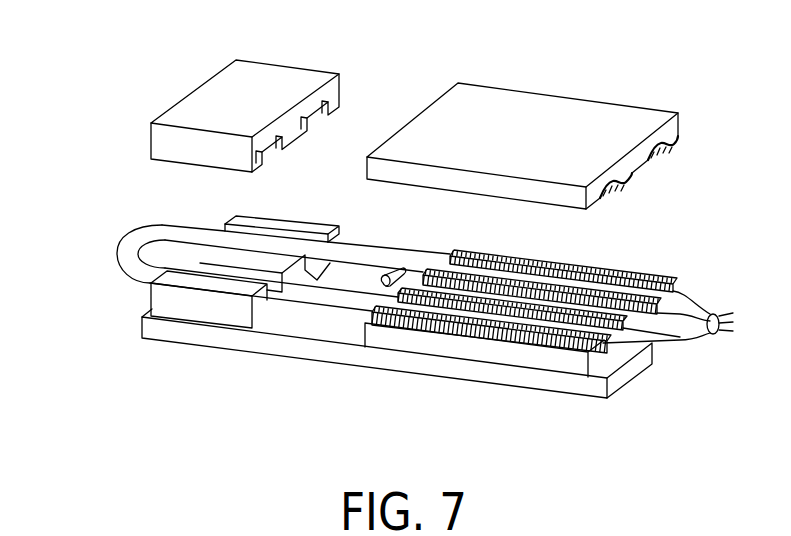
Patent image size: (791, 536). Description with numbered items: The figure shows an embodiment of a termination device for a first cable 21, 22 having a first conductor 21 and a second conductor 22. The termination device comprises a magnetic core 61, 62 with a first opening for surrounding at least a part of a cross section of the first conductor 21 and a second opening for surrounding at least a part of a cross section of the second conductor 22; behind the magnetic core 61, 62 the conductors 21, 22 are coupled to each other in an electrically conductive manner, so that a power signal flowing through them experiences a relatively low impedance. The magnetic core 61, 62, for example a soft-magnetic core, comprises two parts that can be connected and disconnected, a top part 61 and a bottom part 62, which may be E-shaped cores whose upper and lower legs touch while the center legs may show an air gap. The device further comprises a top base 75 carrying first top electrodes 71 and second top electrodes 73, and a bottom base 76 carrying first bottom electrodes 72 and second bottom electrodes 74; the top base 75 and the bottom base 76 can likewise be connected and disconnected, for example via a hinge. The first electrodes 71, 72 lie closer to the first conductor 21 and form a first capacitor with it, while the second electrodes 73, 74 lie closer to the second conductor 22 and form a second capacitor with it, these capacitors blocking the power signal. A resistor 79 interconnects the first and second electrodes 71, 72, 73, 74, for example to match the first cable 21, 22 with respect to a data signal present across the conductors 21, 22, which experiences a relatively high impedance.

The first conductor 21 is at (133, 238).
The second conductor 22 is at (398, 279).
The top part 61 is at (268, 82).
The bottom part 62 is at (198, 307).
The first top electrodes 71 is at (677, 148).
The first bottom electrodes 72 is at (670, 285).
The second top electrodes 73 is at (600, 208).
The second bottom electrodes 74 is at (603, 343).
The top base 75 is at (553, 115).
The bottom base 76 is at (497, 353).
The resistor 79 is at (400, 268).